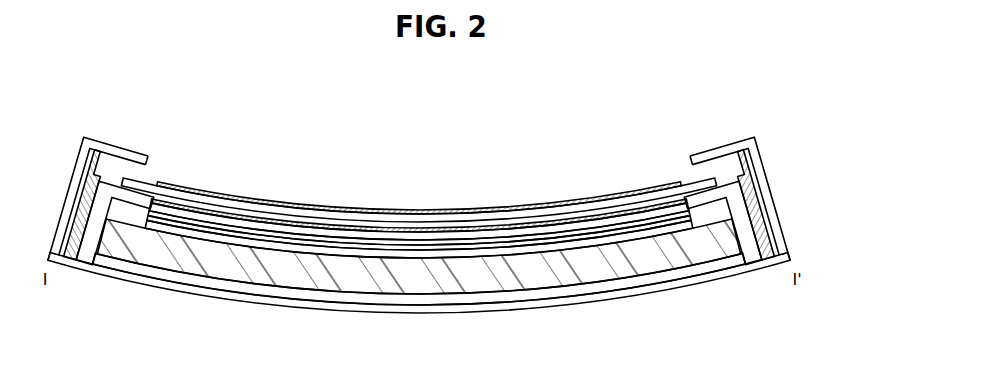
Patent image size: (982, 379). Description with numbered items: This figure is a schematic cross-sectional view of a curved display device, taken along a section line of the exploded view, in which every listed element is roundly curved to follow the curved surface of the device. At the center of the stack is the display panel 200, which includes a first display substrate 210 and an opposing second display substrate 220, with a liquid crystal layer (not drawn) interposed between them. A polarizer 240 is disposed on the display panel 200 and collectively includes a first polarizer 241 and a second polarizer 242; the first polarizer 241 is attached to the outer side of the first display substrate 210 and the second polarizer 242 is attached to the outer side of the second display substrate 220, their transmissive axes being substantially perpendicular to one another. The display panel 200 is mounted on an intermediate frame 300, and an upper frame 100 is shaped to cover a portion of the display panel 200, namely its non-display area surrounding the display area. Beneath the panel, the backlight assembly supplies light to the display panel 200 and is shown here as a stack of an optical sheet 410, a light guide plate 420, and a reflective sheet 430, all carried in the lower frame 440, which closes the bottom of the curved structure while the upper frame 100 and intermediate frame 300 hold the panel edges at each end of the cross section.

The upper frame 100 is at (118, 150).
The display panel 200 is at (418, 172).
The first display substrate 210 is at (437, 155).
The second display substrate 220 is at (437, 211).
The polarizer 240 is at (419, 181).
The first polarizer 241 is at (337, 232).
The second polarizer 242 is at (284, 223).
The intermediate frame 300 is at (758, 162).
The optical sheet 410 is at (715, 210).
The light guide plate 420 is at (718, 240).
The reflective sheet 430 is at (490, 298).
The lower frame 440 is at (404, 309).